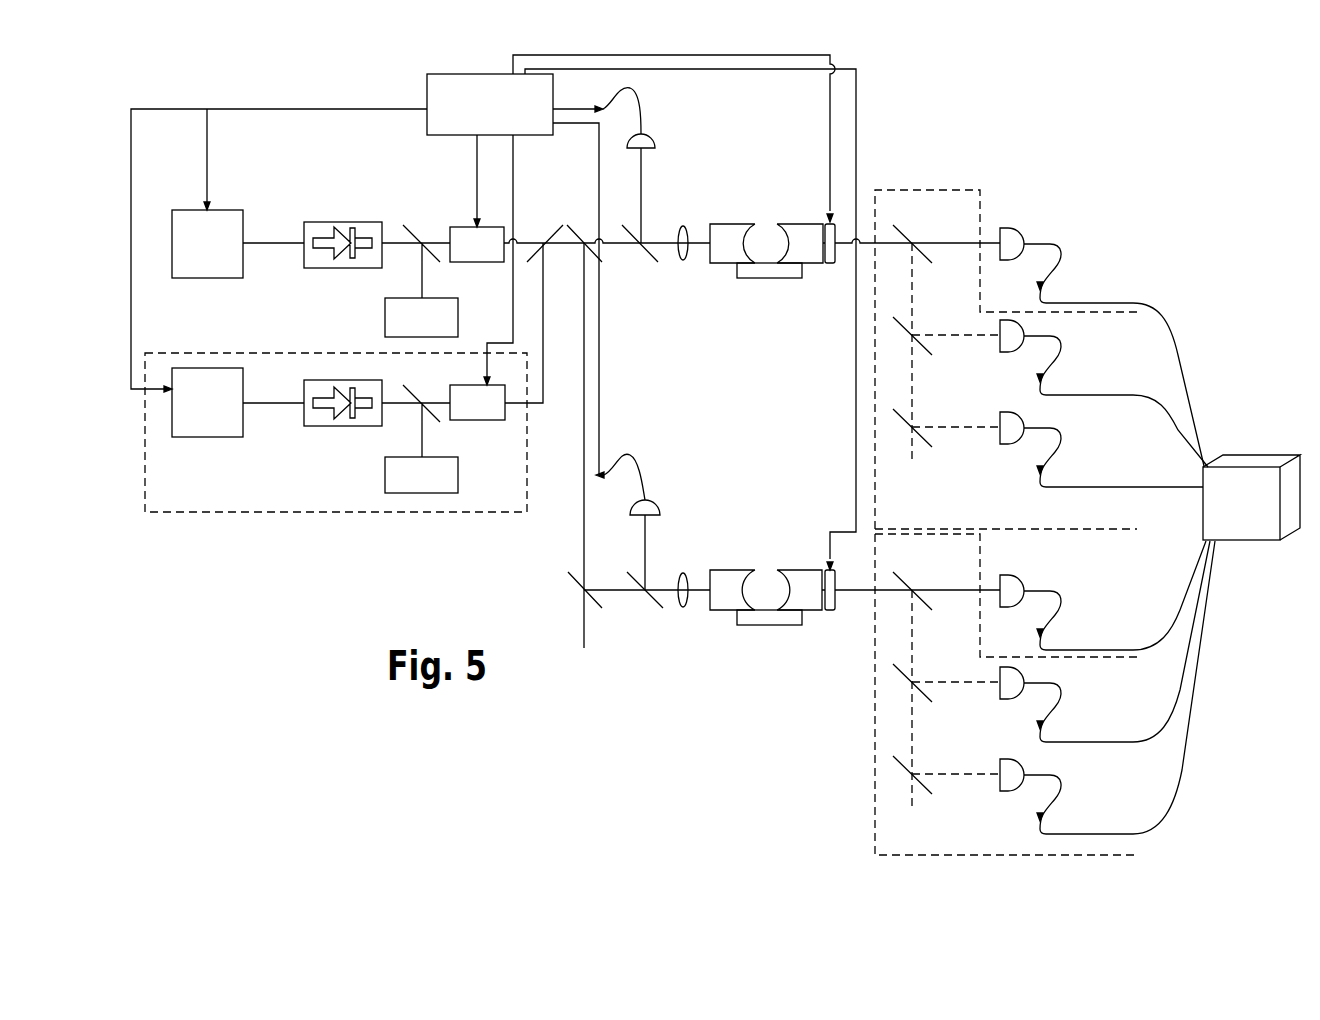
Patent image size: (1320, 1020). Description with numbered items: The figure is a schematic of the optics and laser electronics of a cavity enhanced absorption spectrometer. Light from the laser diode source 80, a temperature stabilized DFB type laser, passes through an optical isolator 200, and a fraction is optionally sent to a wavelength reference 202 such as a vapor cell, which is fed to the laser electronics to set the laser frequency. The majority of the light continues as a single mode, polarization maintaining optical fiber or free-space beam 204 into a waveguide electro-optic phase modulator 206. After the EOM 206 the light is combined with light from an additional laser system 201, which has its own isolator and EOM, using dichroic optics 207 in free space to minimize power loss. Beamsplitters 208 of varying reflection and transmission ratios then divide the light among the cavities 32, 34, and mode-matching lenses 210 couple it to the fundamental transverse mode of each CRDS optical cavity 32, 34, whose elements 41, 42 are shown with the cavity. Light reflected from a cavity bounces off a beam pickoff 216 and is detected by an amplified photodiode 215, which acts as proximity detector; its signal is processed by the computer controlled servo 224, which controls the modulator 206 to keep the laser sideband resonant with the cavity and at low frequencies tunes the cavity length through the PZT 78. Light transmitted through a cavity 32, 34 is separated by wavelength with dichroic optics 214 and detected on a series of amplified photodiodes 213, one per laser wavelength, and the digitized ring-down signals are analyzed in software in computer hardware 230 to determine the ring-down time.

The CRDS optical cavity 32 is at (760, 278).
The CRDS optical cavity 34 is at (760, 625).
The first lens element 41 is at (723, 224).
The second lens element 42 is at (817, 224).
The PZT 78 is at (830, 264).
The laser diode source 80 is at (194, 257).
The optical isolator 200 is at (340, 222).
The additional laser system 201 is at (145, 470).
The wavelength reference 202 is at (402, 331).
The optical fiber or free-space beam 204 is at (441, 232).
The electro-optic modulator 206 is at (458, 257).
The dichroic optics 207 is at (553, 236).
The beamsplitter 208 is at (573, 232).
The mode-matching optics 210 is at (683, 229).
The amplified photodiode 213 is at (1017, 223).
The dichroic optics 214 is at (906, 232).
The amplified photodiode 215 is at (656, 136).
The beam pickoff 216 is at (652, 265).
The computer controlled servo 224 is at (470, 117).
The computer hardware 230 is at (1223, 517).